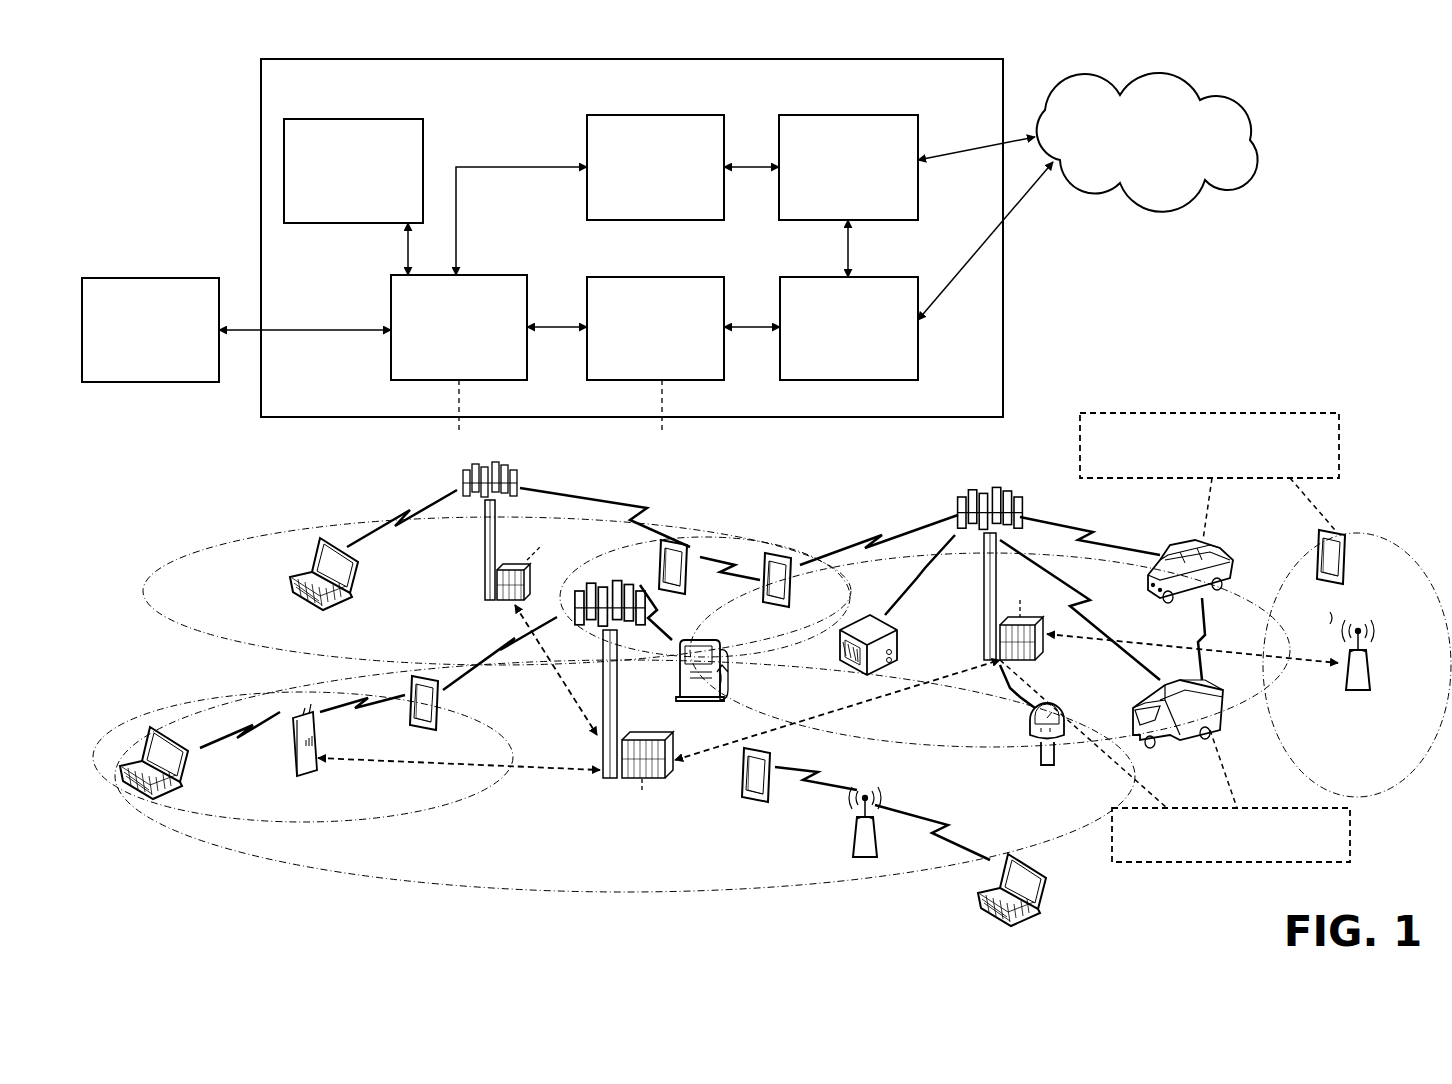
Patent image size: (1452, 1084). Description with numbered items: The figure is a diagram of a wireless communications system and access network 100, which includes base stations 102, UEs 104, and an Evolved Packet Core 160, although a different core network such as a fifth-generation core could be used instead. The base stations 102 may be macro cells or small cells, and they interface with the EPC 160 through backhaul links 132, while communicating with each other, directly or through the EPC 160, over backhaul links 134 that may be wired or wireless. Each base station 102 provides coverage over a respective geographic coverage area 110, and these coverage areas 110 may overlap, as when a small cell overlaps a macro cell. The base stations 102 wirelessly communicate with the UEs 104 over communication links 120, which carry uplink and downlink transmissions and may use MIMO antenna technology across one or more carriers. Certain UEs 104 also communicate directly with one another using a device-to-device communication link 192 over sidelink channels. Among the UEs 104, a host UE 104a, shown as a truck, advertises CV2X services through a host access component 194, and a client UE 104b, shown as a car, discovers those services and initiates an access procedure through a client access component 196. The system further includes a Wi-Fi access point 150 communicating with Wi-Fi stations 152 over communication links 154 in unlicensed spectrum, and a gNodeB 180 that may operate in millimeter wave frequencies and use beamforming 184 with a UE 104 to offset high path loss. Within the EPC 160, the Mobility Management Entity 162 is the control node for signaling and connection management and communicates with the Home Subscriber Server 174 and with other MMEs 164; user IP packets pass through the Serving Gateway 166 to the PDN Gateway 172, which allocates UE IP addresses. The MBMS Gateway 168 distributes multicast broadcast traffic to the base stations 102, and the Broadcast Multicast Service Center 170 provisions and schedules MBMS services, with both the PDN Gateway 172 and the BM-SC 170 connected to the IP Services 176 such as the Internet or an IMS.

The wireless communications system and access network 100 is at (170, 116).
The base station 102 is at (488, 568).
The UE 104 is at (333, 600).
The host UE 104a is at (1188, 740).
The client UE 104b is at (1155, 594).
The geographic coverage area 110 is at (204, 646).
The communication link 120 is at (400, 515).
The backhaul link 132 is at (459, 432).
The backhaul link 134 is at (568, 688).
The Wi-Fi access point 150 is at (868, 858).
The Wi-Fi station 152 is at (740, 772).
The communication link 154 is at (808, 777).
The Evolved Packet Core 160 is at (632, 238).
The Mobility Management Entity 162 is at (484, 275).
The other MMEs 164 is at (343, 119).
The Serving Gateway 166 is at (680, 277).
The MBMS Gateway 168 is at (639, 115).
The Broadcast Multicast Service Center 170 is at (891, 115).
The PDN Gateway 172 is at (890, 277).
The Home Subscriber Server 174 is at (184, 278).
The IP Services 176 is at (1200, 94).
The gNodeB 180 is at (1372, 690).
The beamforming 184 is at (1350, 598).
The device-to-device communication link 192 is at (740, 570).
The host access component 194 is at (1193, 862).
The client access component 196 is at (1260, 413).